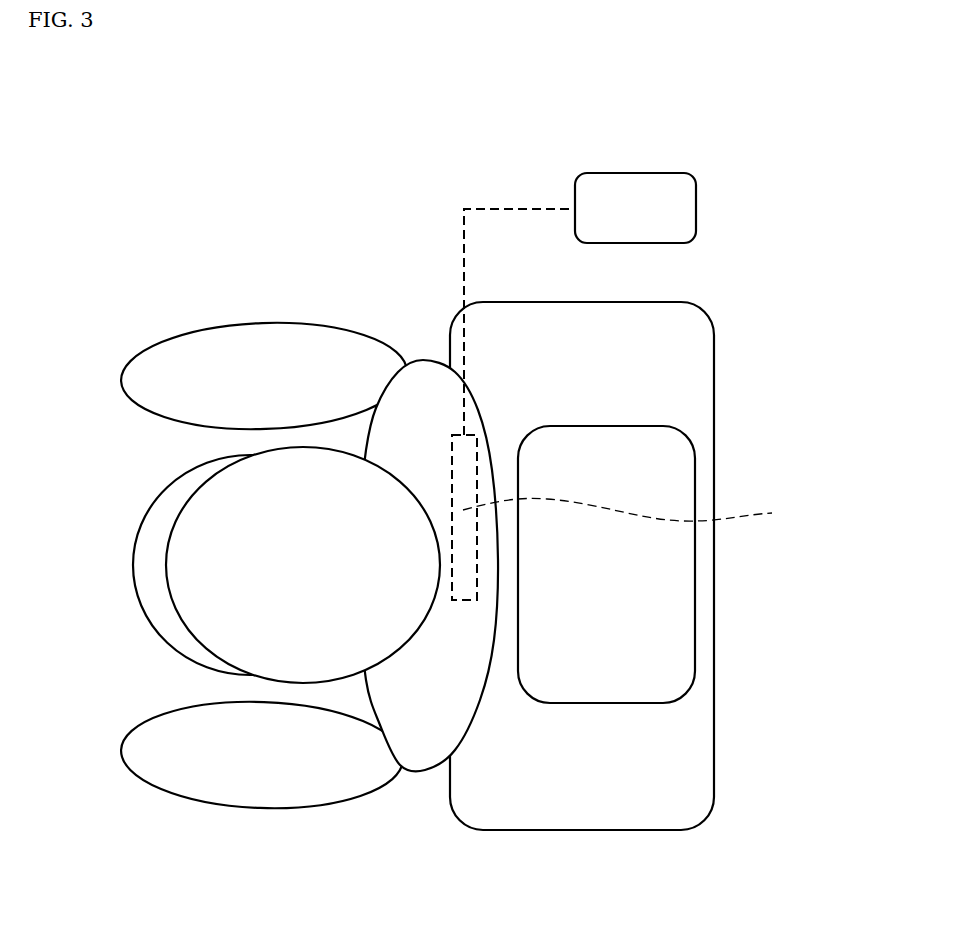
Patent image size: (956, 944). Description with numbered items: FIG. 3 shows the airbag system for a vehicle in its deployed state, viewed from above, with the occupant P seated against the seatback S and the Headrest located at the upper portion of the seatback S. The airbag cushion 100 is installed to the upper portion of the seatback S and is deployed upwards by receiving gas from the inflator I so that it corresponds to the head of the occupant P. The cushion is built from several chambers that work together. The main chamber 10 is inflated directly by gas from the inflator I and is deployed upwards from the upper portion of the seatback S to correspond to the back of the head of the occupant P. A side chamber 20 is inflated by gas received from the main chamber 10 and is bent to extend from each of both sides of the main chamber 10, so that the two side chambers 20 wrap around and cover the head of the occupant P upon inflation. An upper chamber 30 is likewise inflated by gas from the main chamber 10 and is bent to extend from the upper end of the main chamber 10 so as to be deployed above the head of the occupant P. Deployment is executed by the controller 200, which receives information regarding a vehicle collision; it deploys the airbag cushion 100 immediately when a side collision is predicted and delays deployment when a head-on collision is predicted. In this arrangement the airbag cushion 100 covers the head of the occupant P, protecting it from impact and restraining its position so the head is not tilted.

The airbag cushion 100 is at (133, 323).
The main chamber 10 is at (423, 373).
The side chamber 20 is at (252, 337).
The upper chamber 30 is at (202, 586).
The controller 200 is at (632, 180).
The occupant P is at (158, 512).
The inflator I is at (622, 404).
The seatback S is at (727, 598).
The headrest Headrest is at (602, 678).